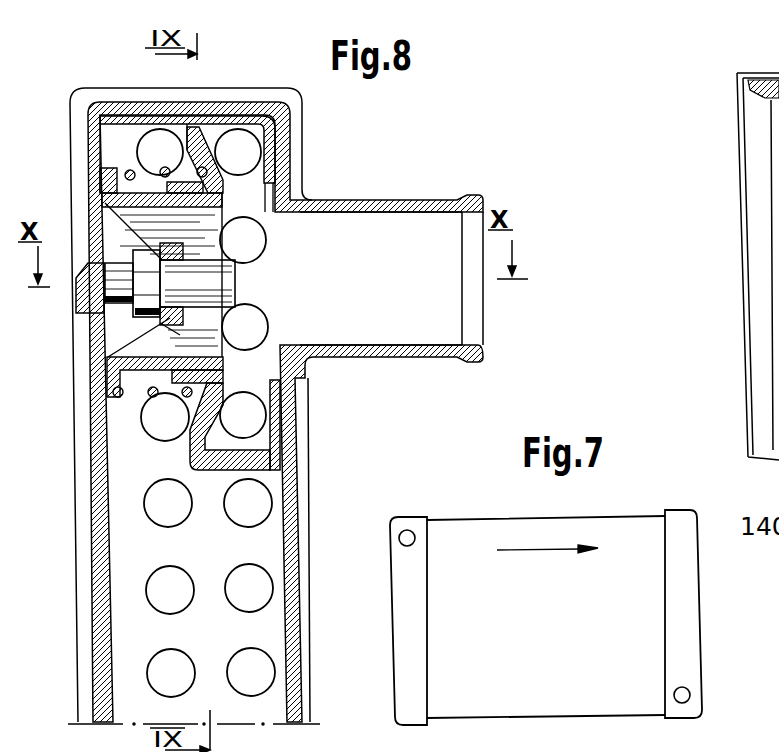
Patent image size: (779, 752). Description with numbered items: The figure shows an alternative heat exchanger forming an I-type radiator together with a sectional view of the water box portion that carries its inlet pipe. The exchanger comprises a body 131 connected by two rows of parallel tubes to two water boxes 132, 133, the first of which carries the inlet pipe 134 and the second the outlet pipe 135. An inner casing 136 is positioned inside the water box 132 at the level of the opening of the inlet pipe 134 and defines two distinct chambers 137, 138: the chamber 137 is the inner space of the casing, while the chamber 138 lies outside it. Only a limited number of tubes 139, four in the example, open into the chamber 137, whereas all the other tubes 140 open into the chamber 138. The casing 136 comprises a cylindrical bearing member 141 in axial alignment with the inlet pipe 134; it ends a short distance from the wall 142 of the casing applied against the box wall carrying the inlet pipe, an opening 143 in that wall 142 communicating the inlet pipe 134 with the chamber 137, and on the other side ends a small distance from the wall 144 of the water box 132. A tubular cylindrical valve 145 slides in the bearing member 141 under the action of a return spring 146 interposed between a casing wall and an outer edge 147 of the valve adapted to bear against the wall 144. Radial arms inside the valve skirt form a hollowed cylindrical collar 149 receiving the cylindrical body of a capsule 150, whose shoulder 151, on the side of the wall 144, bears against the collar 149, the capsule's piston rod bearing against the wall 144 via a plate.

In FIG. 7, the body 131 is at (544, 514).
In FIG. 8, the water box 132 is at (222, 86).
In FIG. 7, the water box 132 is at (425, 490).
In FIG. 8, the water box 133 is at (279, 412).
In FIG. 7, the water box 133 is at (711, 481).
In FIG. 8, the inlet pipe 134 is at (403, 200).
In FIG. 7, the inlet pipe 134 is at (399, 538).
In FIG. 7, the outlet pipe 135 is at (691, 696).
In FIG. 8, the inner casing 136 is at (190, 440).
In FIG. 8, the chamber 137 is at (248, 180).
In FIG. 8, the chamber 138 is at (113, 138).
In FIG. 8, the tubes 139 is at (270, 257).
In FIG. 8, the tubes 140 is at (231, 568).
In FIG. 8, the cylindrical bearing member 141 is at (272, 381).
In FIG. 8, the wall 142 is at (272, 432).
In FIG. 8, the opening 143 is at (270, 327).
In FIG. 8, the wall 144 is at (107, 342).
In FIG. 8, the tubular cylindrical valve 145 is at (112, 194).
In FIG. 8, the return spring 146 is at (150, 398).
In FIG. 8, the outer edge 147 is at (113, 392).
In FIG. 8, the hollowed cylindrical collar 149 is at (178, 243).
In FIG. 8, the capsule 150 is at (222, 277).
In FIG. 8, the shoulder 151 is at (104, 312).